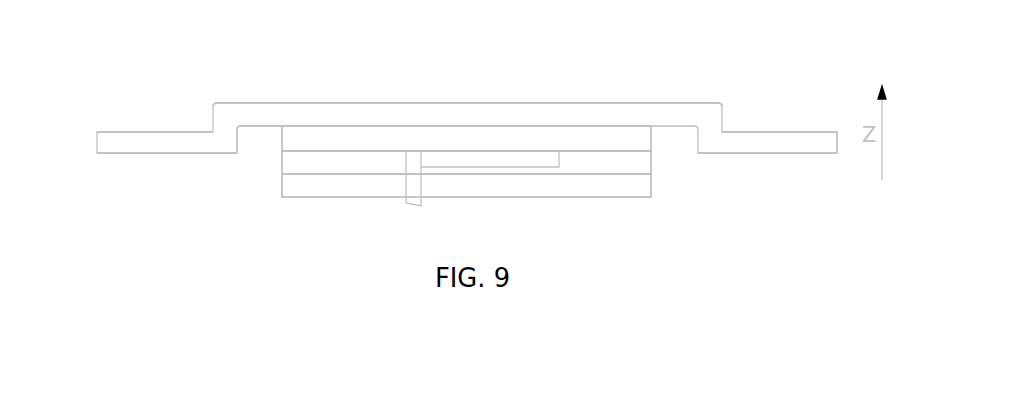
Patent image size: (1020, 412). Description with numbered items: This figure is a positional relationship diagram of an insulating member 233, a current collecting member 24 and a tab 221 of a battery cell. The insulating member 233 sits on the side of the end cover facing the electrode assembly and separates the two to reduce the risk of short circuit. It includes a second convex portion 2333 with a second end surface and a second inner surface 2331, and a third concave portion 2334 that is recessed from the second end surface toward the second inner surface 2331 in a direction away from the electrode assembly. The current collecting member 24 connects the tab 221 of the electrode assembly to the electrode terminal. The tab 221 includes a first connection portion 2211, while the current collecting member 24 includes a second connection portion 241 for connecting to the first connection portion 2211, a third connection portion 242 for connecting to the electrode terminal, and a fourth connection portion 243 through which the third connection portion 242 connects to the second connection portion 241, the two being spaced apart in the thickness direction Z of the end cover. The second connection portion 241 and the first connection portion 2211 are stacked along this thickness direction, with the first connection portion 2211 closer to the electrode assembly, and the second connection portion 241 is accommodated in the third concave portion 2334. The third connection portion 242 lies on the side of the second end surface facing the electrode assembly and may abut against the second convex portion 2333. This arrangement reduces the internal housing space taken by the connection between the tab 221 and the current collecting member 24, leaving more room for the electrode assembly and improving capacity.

The insulating member 233 is at (778, 110).
The second inner surface 2331 is at (258, 112).
The second convex portion 2333 is at (128, 143).
The third concave portion 2334 is at (255, 140).
The current collecting member 24 is at (276, 194).
The second connection portion 241 is at (620, 141).
The third connection portion 242 is at (632, 190).
The fourth connection portion 243 is at (645, 158).
The tab 221 is at (403, 202).
The first connection portion 2211 is at (502, 158).